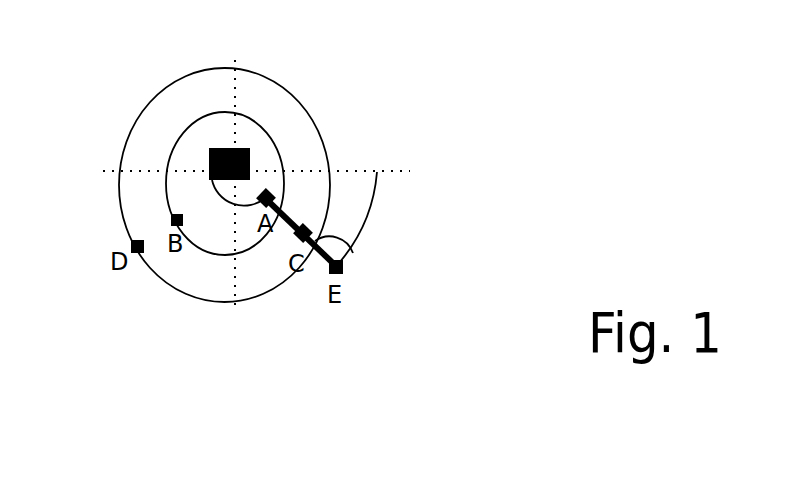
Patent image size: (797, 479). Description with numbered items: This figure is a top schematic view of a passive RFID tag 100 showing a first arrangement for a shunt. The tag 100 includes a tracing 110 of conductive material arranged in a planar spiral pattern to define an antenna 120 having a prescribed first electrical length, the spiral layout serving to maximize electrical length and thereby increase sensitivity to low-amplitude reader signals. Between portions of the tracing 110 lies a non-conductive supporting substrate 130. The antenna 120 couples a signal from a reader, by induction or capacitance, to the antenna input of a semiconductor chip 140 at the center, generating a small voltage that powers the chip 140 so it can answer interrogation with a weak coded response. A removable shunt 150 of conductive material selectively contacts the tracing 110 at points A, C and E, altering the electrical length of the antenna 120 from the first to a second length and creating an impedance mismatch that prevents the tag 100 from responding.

The passive RFID tag 100 is at (85, 322).
The tracing 110 is at (167, 96).
The antenna 120 is at (396, 122).
The non-conductive supporting substrate 130 is at (272, 101).
The semiconductor chip 140 is at (212, 162).
The removable shunt 150 is at (342, 243).